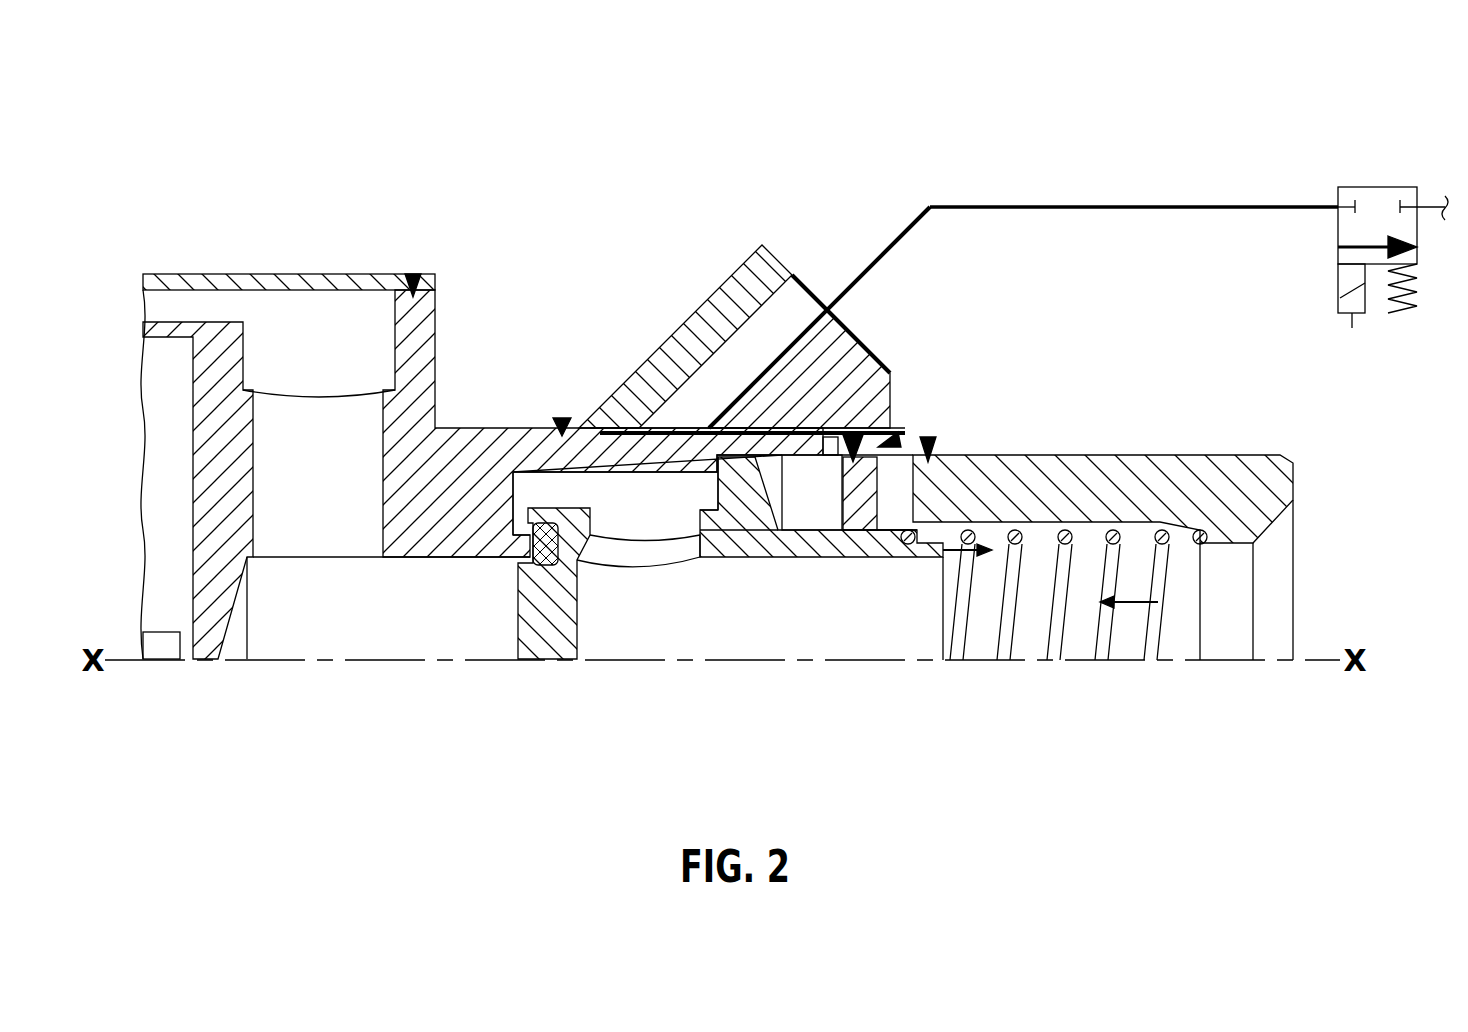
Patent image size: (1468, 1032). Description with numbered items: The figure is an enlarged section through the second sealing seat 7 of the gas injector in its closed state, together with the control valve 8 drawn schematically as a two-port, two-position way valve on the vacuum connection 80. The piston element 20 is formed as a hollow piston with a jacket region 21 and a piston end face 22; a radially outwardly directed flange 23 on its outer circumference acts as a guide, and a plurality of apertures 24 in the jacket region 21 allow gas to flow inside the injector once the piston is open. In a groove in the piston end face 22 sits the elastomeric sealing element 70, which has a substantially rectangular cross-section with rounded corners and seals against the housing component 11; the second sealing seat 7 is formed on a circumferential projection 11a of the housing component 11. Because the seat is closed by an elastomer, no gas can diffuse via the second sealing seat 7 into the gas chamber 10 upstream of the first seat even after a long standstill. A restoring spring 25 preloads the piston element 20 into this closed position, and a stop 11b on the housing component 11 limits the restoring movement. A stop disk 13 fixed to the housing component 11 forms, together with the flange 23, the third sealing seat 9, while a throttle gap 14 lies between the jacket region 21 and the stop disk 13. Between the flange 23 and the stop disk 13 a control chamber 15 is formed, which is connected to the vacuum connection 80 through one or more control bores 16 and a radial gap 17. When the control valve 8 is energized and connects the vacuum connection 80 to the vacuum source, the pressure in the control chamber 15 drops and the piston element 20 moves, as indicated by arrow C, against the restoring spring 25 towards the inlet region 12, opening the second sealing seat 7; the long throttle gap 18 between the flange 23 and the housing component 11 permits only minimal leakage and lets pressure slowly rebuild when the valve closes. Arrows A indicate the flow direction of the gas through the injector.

The second sealing seat 7 is at (530, 556).
The control valve 8 is at (1377, 187).
The third sealing seat 9 is at (800, 495).
The gas chamber 10 is at (286, 322).
The housing component 11 is at (460, 478).
The circumferential projection 11a is at (513, 540).
The stop 11b is at (687, 433).
The inlet region 12 is at (1200, 487).
The stop disk 13 is at (868, 483).
The throttle gap 14 is at (857, 542).
The control chamber 15 is at (840, 517).
The control bores 16 is at (830, 447).
The radial gap 17 is at (852, 433).
The throttle gap 18 is at (737, 430).
The piston element 20 is at (580, 470).
The jacket region 21 is at (837, 543).
The piston end face 22 is at (563, 637).
The radially outwardly directed flange 23 is at (737, 485).
The apertures 24 is at (645, 542).
The restoring spring 25 is at (1063, 527).
The elastomeric sealing element 70 is at (548, 570).
The vacuum connection 80 is at (762, 277).
The flow direction A is at (1133, 607).
The arrow C is at (953, 555).